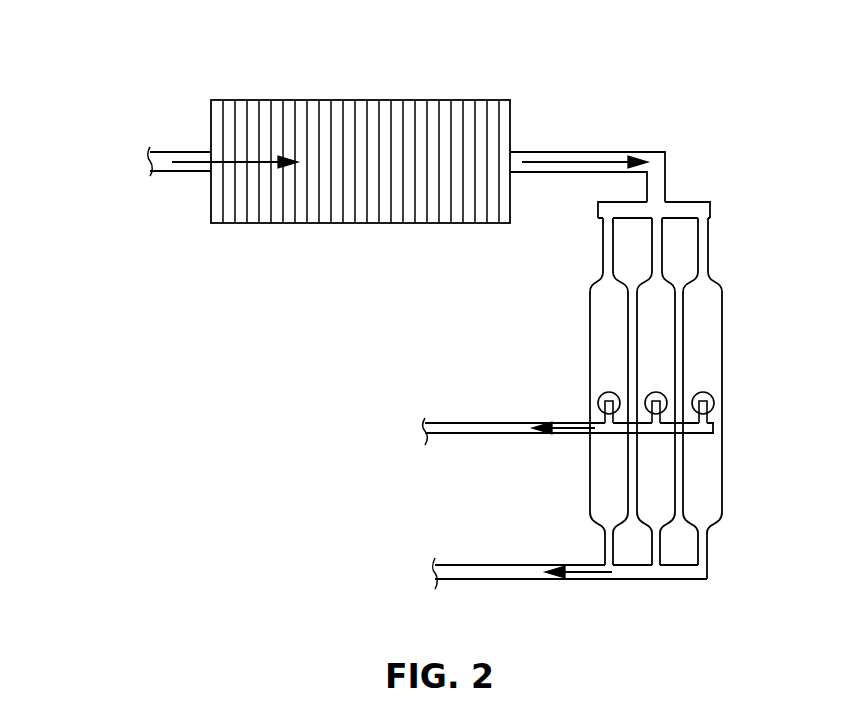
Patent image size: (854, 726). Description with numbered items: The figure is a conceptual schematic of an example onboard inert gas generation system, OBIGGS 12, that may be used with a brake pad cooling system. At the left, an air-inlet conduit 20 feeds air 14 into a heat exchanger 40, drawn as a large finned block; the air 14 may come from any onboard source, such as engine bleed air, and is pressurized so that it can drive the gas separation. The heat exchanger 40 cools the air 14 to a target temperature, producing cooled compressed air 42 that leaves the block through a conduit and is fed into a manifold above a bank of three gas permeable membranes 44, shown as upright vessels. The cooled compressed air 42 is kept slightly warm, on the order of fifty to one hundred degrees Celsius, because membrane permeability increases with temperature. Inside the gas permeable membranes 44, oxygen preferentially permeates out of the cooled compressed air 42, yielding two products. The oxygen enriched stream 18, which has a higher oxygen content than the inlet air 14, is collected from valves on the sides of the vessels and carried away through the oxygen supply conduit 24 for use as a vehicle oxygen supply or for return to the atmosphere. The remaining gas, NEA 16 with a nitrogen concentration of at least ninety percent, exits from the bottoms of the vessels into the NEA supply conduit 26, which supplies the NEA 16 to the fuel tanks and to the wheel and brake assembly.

The OBIGGS 12 is at (88, 72).
The air 14 is at (205, 167).
The NEA 16 is at (528, 572).
The oxygen enriched stream 18 is at (504, 428).
The air-inlet conduit 20 is at (184, 158).
The oxygen supply conduit 24 is at (484, 434).
The NEA supply conduit 26 is at (711, 572).
The heat exchanger 40 is at (298, 108).
The cooled compressed air 42 is at (612, 162).
The gas permeable membranes 44 is at (606, 339).